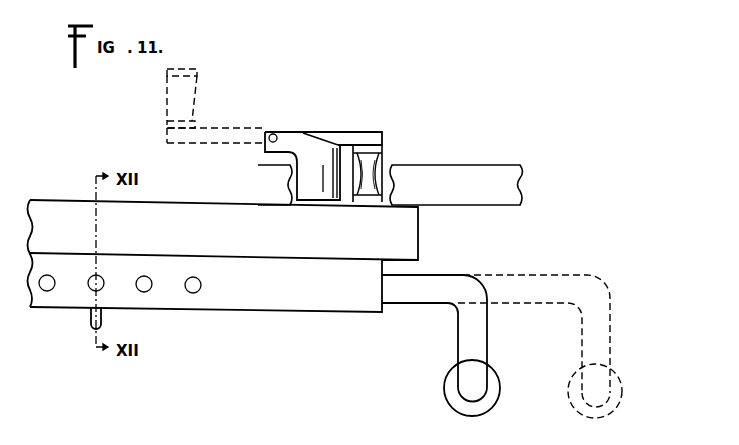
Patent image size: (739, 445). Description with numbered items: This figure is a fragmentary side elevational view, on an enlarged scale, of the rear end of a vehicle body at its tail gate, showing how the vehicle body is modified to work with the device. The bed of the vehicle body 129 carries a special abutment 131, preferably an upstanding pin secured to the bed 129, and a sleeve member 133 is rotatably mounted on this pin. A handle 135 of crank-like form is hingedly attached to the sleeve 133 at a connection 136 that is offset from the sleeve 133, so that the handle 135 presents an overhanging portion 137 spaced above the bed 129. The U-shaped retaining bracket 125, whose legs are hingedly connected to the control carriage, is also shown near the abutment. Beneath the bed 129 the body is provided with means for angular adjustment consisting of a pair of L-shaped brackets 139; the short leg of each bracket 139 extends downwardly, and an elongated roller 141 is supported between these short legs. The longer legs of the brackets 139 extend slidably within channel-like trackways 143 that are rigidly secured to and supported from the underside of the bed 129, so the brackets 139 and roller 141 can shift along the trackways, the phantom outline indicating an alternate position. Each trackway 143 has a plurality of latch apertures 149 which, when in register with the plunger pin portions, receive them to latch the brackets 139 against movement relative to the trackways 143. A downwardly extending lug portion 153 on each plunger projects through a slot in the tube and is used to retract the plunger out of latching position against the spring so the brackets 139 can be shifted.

The retaining bracket 125 is at (458, 172).
The vehicle bed 129 is at (38, 206).
The abutment 131 is at (327, 113).
The sleeve member 133 is at (314, 162).
The handle 135 is at (186, 92).
The hinged connection 136 is at (268, 142).
The overhanging portion 137 is at (284, 142).
The L-shaped brackets 139 is at (420, 295).
The elongated roller 141 is at (483, 404).
The trackways 143 is at (334, 305).
The latch apertures 149 is at (52, 278).
The lug portion 153 is at (91, 323).